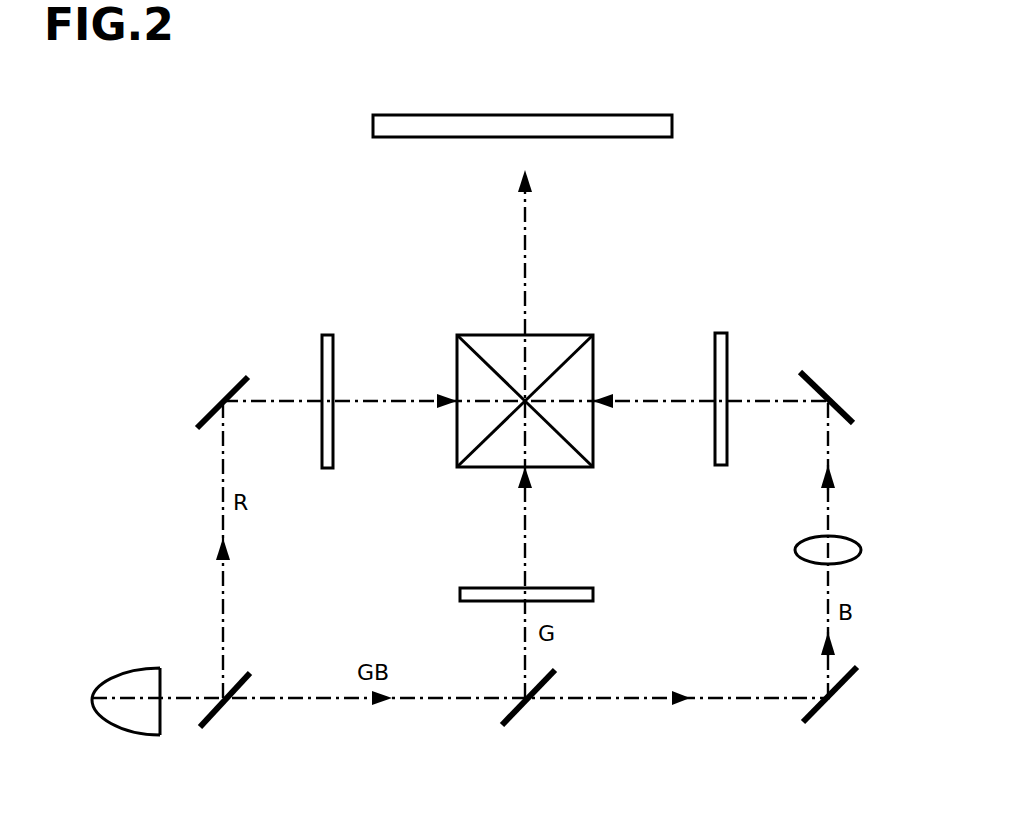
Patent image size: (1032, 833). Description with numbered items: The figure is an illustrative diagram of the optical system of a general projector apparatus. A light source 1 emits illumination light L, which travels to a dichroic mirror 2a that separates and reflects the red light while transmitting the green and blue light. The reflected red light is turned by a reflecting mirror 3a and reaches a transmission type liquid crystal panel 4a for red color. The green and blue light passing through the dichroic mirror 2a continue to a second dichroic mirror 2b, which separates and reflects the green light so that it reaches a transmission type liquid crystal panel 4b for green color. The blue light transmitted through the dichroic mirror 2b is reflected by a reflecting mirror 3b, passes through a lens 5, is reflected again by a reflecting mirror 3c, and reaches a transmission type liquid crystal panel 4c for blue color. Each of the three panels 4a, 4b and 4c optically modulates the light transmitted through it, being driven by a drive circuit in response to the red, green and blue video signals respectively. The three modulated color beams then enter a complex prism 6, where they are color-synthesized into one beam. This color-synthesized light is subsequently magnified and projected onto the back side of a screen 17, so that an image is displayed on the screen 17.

The light source 1 is at (126, 670).
The illumination light L is at (180, 697).
The dichroic mirror 2a is at (222, 722).
The dichroic mirror 2b is at (522, 705).
The reflecting mirror 3a is at (238, 383).
The reflecting mirror 3b is at (820, 708).
The reflecting mirror 3c is at (814, 384).
The transmission type liquid crystal panel for red color 4a is at (326, 335).
The transmission type liquid crystal panel for green color 4b is at (565, 588).
The transmission type liquid crystal panel for blue color 4c is at (722, 333).
The lens 5 is at (856, 540).
The complex prism 6 is at (555, 335).
The screen 17 is at (623, 115).